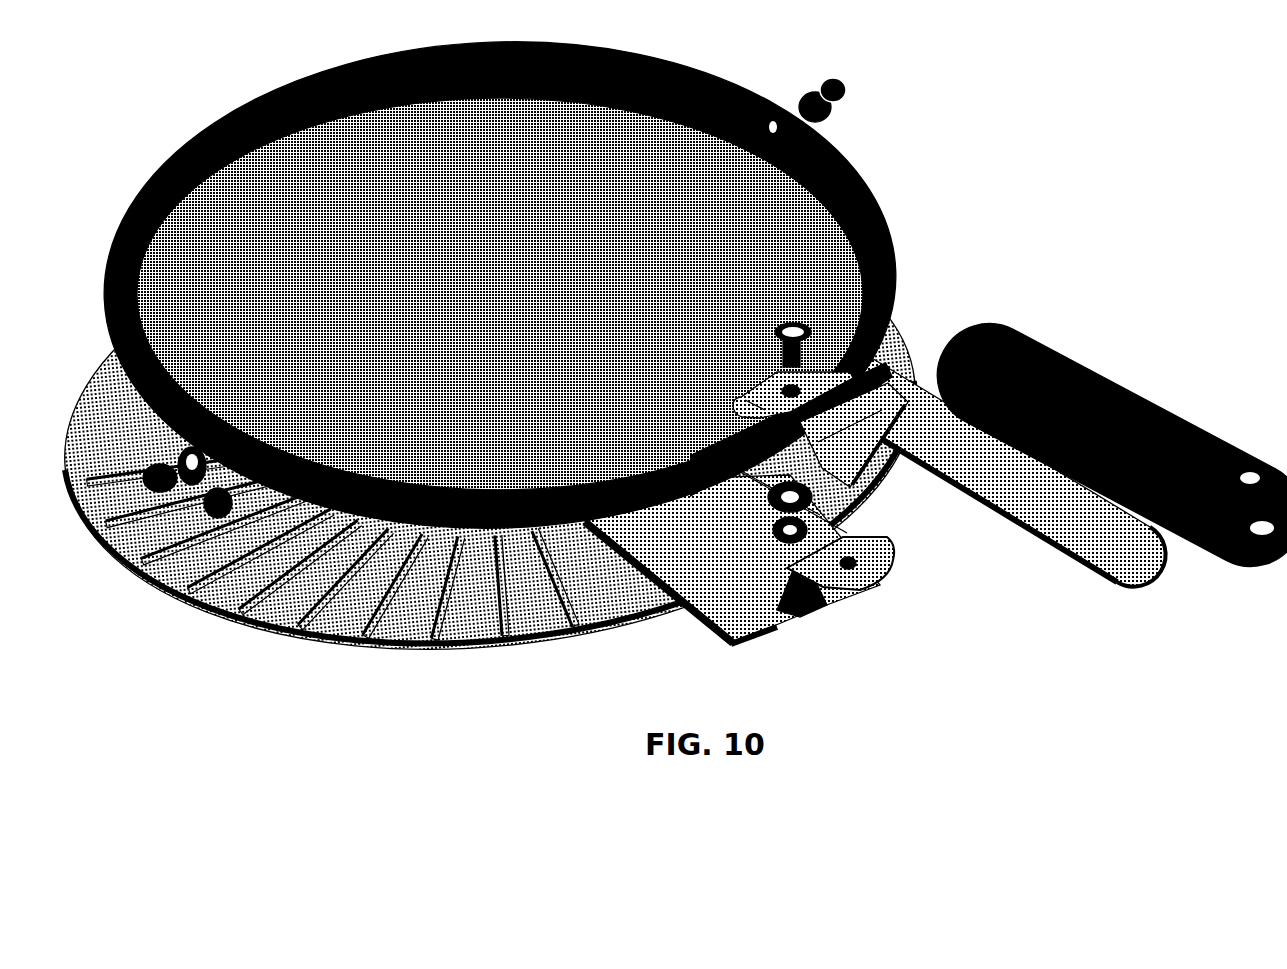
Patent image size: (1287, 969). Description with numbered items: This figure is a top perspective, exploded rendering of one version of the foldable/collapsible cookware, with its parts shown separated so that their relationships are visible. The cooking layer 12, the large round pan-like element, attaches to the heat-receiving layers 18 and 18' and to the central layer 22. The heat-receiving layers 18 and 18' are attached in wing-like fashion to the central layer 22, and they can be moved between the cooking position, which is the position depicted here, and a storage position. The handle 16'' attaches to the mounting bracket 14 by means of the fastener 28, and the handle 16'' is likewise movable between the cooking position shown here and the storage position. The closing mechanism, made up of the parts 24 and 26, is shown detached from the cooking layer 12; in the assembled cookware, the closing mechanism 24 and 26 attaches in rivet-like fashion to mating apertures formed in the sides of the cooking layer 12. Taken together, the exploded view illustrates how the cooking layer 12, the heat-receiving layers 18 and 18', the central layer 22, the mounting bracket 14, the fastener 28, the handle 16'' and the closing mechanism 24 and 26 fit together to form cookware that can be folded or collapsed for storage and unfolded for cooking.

The cooking layer 12 is at (386, 389).
The mounting bracket 14 is at (872, 573).
The handle 16'' is at (1001, 472).
The heat-receiving layer 18 is at (490, 425).
The heat-receiving layer 18' is at (844, 469).
The central layer 22 is at (677, 610).
The closing mechanism 24 is at (193, 487).
The closing mechanism 26 is at (835, 107).
The fastener 28 is at (788, 322).